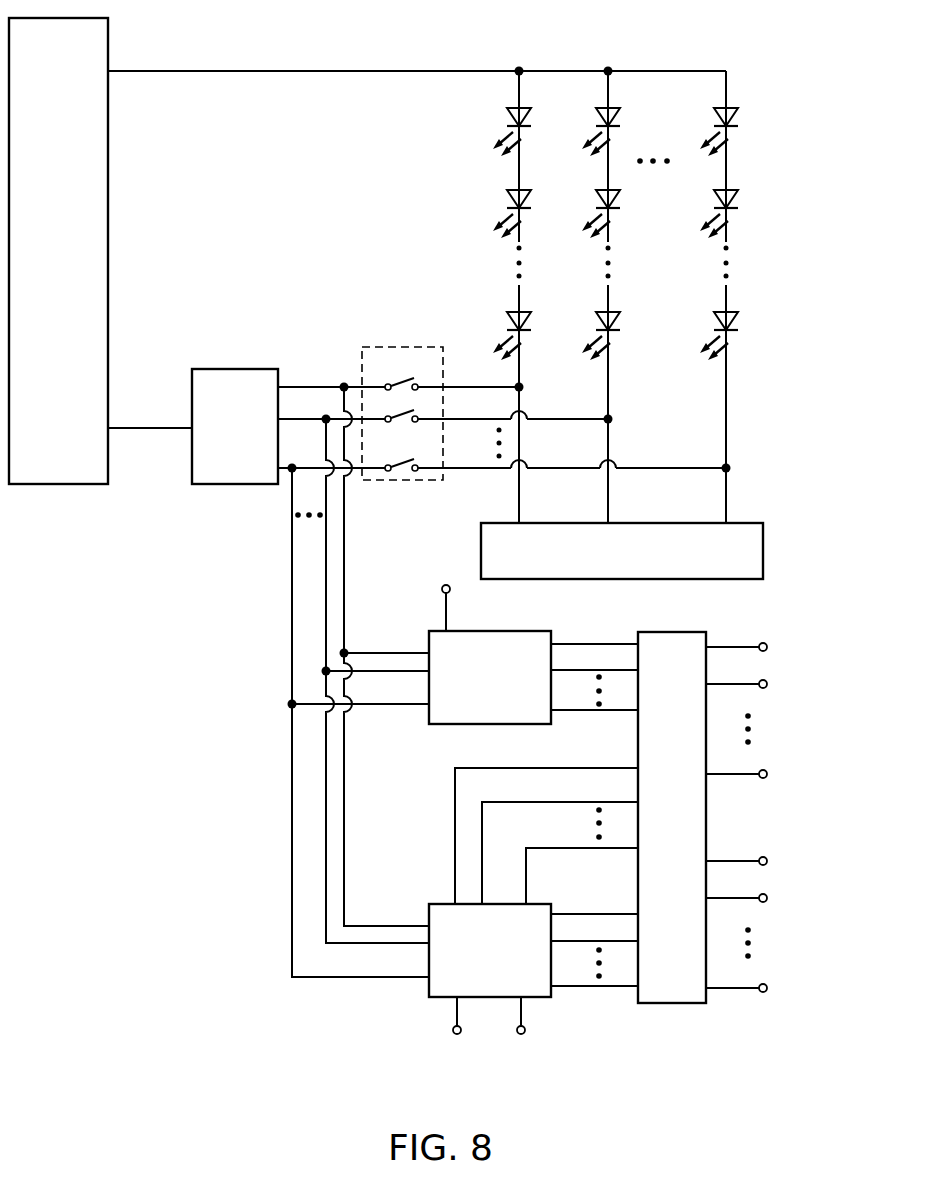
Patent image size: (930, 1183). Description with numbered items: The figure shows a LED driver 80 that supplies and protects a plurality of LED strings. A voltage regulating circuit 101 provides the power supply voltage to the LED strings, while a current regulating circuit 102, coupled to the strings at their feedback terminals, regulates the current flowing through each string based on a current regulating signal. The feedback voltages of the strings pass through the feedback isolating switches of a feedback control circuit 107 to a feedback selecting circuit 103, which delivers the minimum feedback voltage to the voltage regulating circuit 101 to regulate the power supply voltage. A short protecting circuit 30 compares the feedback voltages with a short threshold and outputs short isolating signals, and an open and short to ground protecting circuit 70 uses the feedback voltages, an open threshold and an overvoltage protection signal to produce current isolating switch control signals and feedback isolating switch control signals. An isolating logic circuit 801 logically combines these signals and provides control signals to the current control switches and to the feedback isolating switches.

The LED driver 80 is at (790, 62).
The voltage regulating circuit 101 is at (58, 251).
The current regulating circuit 102 is at (622, 551).
The feedback selecting circuit 103 is at (235, 426).
The feedback control circuit 107 is at (395, 347).
The short protecting circuit 30 is at (490, 677).
The open and short to ground protecting circuit 70 is at (490, 950).
The isolating logic circuit 801 is at (672, 817).